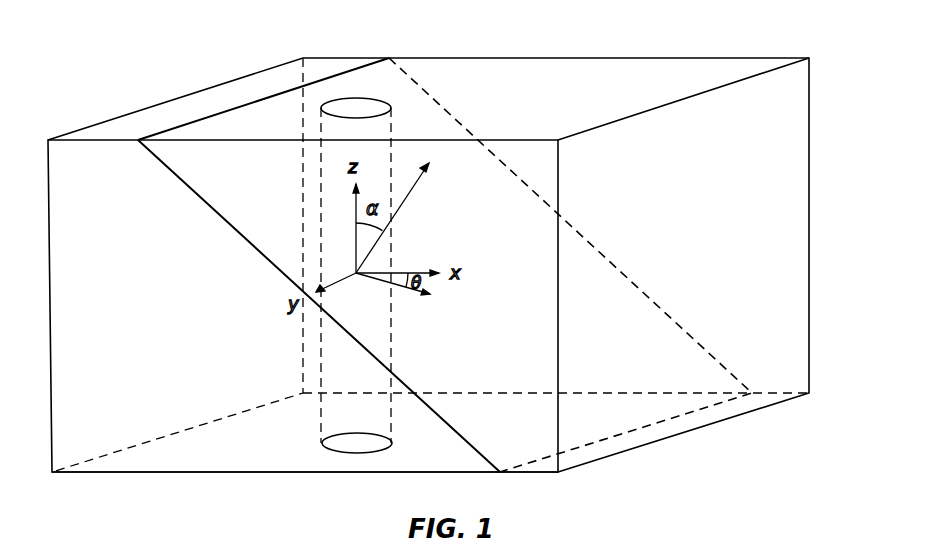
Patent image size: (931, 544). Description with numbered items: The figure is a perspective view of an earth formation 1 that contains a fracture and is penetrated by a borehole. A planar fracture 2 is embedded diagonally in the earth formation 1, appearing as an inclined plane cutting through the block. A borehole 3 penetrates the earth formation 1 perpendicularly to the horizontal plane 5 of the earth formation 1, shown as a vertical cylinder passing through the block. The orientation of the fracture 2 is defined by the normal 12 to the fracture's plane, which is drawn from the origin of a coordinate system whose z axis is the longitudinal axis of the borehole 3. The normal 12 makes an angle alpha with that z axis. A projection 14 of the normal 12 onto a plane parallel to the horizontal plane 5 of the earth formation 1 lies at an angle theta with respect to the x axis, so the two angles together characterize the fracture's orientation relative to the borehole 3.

The earth formation 1 is at (126, 262).
The planar fracture 2 is at (263, 100).
The borehole 3 is at (363, 107).
The horizontal plane 5 is at (173, 473).
The normal 12 is at (412, 190).
The projection 14 is at (400, 287).